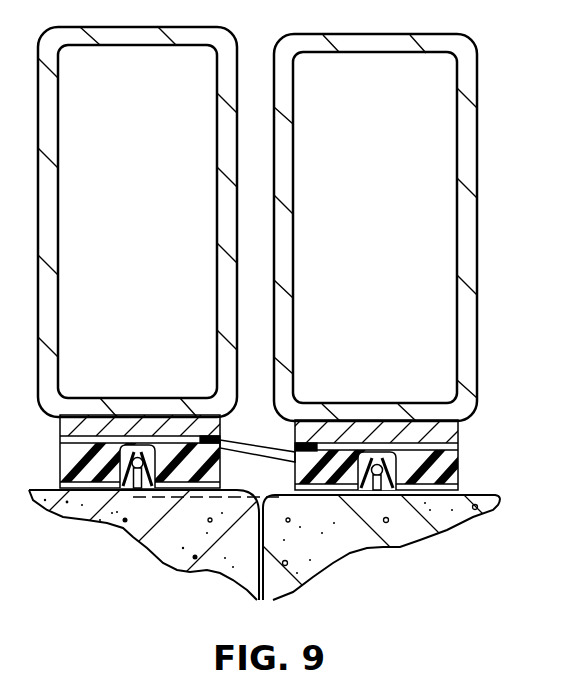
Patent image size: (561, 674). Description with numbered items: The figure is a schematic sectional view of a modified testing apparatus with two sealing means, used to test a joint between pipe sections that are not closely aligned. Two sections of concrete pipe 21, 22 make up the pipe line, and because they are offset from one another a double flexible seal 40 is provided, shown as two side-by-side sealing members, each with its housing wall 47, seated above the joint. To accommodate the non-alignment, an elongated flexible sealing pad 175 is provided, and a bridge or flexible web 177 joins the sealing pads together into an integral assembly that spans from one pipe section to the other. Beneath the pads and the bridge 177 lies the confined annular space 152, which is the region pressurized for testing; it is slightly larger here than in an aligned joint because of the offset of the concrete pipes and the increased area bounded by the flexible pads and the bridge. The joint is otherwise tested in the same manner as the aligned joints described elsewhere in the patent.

The flexible seal 40 is at (274, 210).
The cell housing wall 47 is at (231, 54).
The bridge 177 is at (268, 453).
The confined annular space 152 is at (275, 484).
The elongated flexible sealing pad 175 is at (458, 480).
The concrete pipe section 22 is at (133, 532).
The concrete pipe section 21 is at (403, 535).